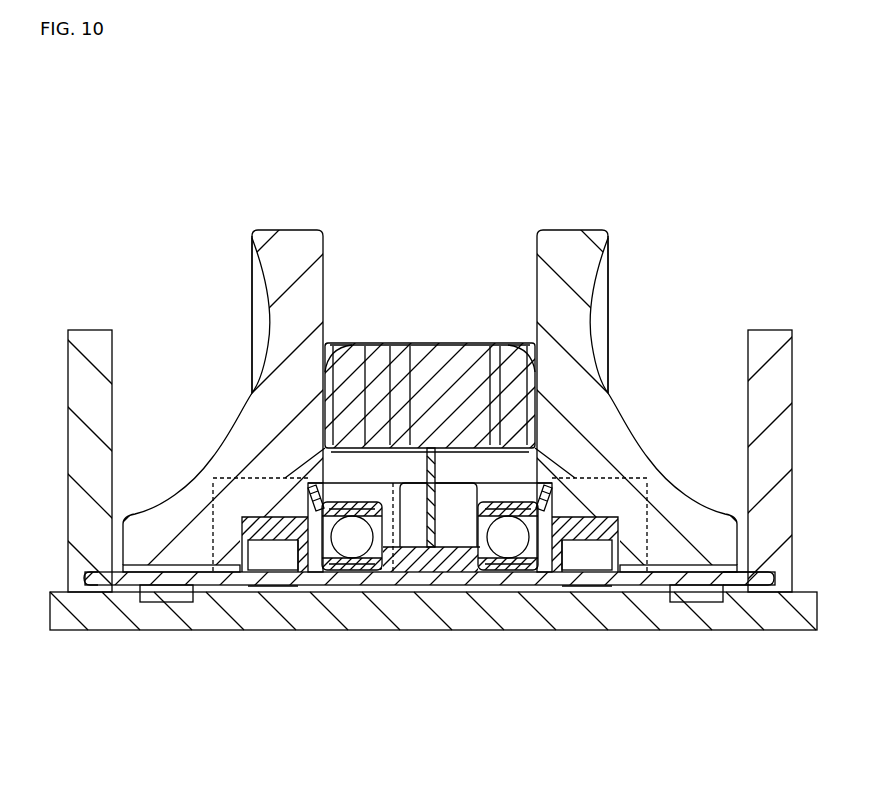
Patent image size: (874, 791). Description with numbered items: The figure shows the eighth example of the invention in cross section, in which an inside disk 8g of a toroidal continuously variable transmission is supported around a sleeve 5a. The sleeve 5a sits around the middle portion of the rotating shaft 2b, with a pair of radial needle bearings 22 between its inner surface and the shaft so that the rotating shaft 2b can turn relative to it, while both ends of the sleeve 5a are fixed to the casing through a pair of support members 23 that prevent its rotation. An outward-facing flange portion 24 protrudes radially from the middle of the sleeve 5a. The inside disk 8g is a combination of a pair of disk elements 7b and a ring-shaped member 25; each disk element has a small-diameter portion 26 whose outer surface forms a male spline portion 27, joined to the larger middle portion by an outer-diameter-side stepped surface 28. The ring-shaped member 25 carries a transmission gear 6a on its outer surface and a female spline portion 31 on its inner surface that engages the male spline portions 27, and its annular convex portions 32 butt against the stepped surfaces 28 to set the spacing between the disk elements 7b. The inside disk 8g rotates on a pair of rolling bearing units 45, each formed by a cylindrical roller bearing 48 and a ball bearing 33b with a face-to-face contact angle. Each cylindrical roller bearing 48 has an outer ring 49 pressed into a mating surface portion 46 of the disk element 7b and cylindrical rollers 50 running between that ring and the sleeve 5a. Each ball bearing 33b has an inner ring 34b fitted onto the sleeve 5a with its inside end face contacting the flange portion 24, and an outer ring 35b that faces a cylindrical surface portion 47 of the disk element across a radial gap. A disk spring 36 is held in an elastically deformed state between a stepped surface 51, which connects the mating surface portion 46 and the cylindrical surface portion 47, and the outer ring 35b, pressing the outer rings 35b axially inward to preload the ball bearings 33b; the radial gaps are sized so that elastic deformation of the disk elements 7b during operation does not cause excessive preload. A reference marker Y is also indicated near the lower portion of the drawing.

The rotating shaft 2b is at (788, 622).
The sleeve 5a is at (740, 590).
The transmission gear 6a is at (432, 355).
The disk elements 7b is at (287, 218).
The inside disk 8g is at (423, 172).
The radial needle bearings 22 is at (165, 605).
The support members 23 is at (88, 345).
The outward-facing flange portion 24 is at (436, 590).
The ring-shaped member 25 is at (452, 355).
The small-diameter portion 26 is at (365, 360).
The male spline portion 27 is at (393, 360).
The outer-diameter-side stepped surface 28 is at (352, 360).
The female spline portion 31 is at (410, 360).
The annular convex portions 32 is at (278, 388).
The ball bearings 33b is at (350, 590).
The inner rings 34b is at (370, 590).
The outer rings 35b is at (326, 590).
The disk springs 36 is at (306, 476).
The rolling bearing units 45 is at (312, 590).
The mating surface portion 46 is at (240, 530).
The cylindrical surface portion 47 is at (575, 430).
The cylindrical roller bearings 48 is at (280, 590).
The outer rings 49 is at (250, 578).
The cylindrical rollers 50 is at (262, 590).
The stepped surfaces 51 is at (310, 498).
The direction Y is at (118, 636).